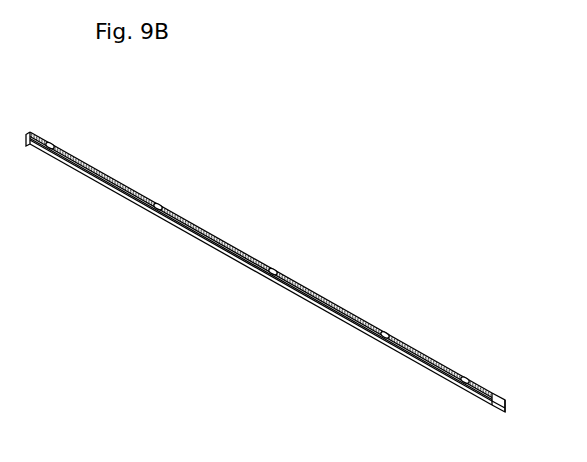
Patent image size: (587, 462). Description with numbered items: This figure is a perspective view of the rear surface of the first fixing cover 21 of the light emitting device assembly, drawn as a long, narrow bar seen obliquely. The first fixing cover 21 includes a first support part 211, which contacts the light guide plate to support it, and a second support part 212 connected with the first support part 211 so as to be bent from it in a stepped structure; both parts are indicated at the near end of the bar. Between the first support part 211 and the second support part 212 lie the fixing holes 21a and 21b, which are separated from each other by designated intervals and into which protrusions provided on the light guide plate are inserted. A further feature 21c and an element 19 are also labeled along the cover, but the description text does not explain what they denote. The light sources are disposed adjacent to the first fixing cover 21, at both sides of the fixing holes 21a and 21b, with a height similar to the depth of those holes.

The light source strip / LED strip 19 is at (205, 229).
The first fixing cover 21 is at (324, 298).
The fixing hole 21a is at (158, 203).
The fixing hole 21b is at (274, 268).
The light emitting element 21c is at (54, 142).
The first support part 211 is at (493, 412).
The second support part 212 is at (507, 411).